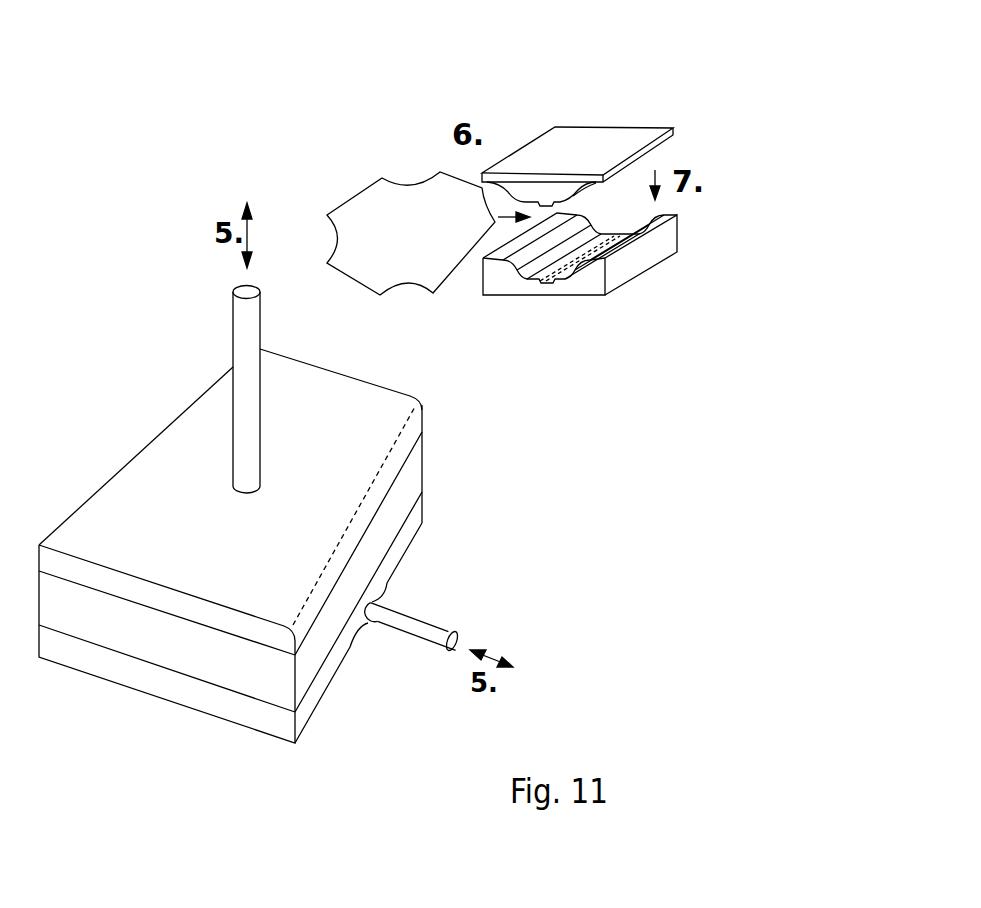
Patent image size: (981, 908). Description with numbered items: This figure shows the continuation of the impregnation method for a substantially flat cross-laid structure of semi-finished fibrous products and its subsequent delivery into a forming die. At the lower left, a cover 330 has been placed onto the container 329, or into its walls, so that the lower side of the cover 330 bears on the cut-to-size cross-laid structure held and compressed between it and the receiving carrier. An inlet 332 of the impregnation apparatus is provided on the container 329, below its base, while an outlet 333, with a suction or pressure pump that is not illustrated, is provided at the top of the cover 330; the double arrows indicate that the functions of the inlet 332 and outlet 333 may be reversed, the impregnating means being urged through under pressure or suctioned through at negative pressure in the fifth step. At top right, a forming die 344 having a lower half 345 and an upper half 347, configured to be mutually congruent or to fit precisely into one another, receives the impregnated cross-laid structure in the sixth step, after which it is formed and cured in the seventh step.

The container 329 is at (129, 712).
The cover 330 is at (337, 385).
The outlet 333 is at (238, 341).
The inlet 332 is at (415, 625).
The forming die 344 is at (577, 244).
The lower half 345 is at (583, 287).
The upper half 347 is at (542, 152).